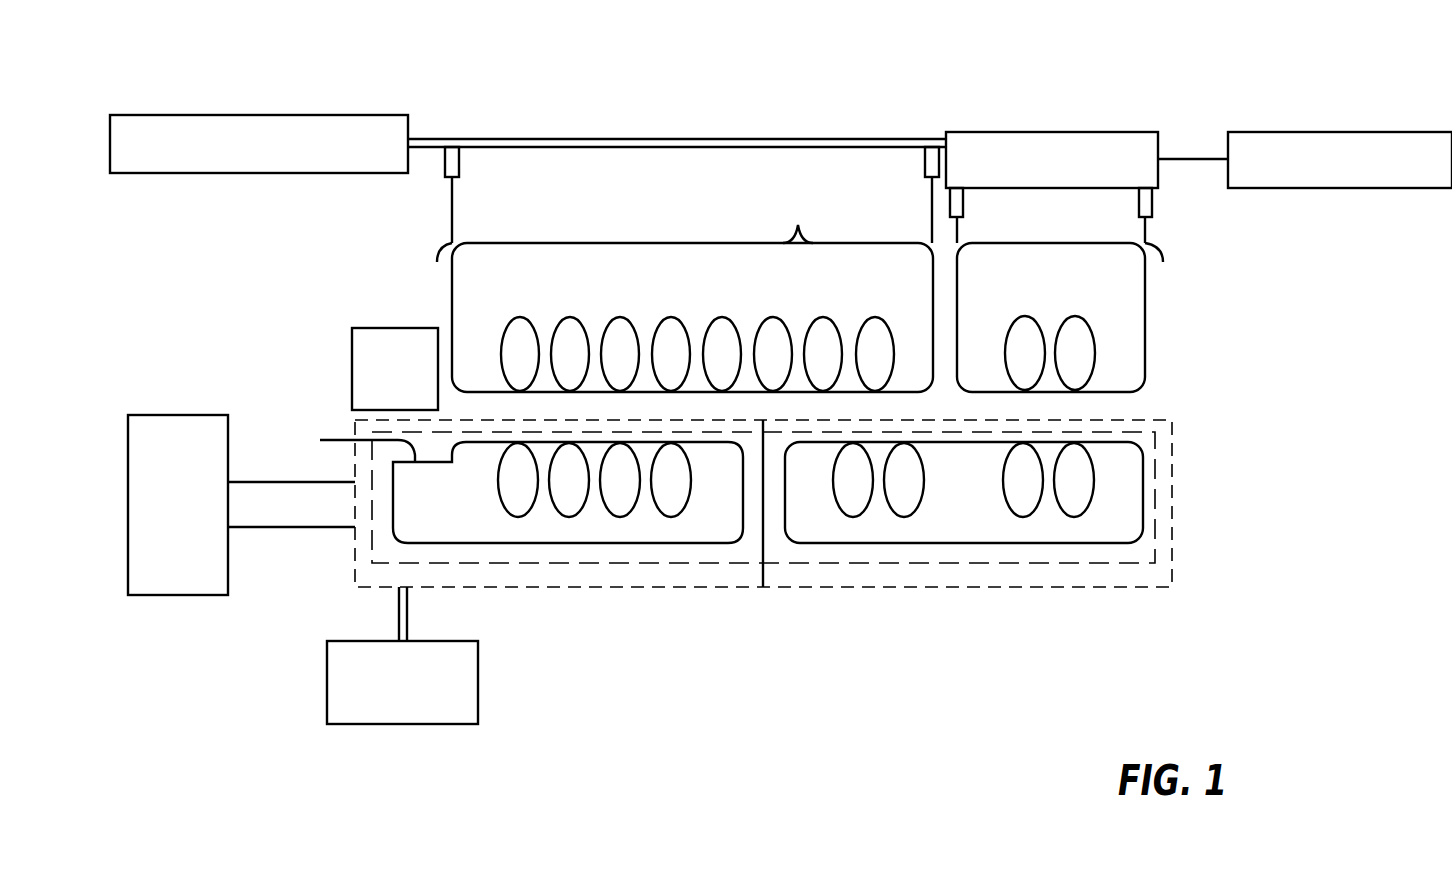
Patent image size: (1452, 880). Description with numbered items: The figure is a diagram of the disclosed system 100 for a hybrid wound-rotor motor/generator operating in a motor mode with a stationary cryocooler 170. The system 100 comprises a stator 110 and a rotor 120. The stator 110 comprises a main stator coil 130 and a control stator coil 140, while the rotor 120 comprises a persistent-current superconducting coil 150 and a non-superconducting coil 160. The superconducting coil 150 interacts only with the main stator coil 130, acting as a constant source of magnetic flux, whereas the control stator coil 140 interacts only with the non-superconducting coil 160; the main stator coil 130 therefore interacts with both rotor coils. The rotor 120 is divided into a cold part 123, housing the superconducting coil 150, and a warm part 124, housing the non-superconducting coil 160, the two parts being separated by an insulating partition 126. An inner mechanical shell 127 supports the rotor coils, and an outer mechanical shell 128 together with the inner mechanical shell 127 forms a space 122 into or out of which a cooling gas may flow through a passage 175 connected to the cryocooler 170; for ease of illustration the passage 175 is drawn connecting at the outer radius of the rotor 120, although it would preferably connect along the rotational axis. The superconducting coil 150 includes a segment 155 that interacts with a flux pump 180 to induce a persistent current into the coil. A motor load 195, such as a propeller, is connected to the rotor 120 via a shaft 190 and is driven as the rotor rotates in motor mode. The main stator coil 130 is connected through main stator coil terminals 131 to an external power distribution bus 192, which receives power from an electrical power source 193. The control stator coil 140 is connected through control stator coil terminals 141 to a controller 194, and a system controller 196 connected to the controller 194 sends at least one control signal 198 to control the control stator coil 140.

The system 100 is at (370, 54).
The stator 110 is at (800, 229).
The rotor 120 is at (1176, 522).
The space 122 is at (624, 576).
The cold part 123 is at (669, 578).
The warm part 124 is at (973, 577).
The insulating partition 126 is at (765, 553).
The inner mechanical shell 127 is at (1156, 458).
The outer mechanical shell 128 is at (1173, 575).
The main stator coil 130 is at (592, 312).
The main stator coil terminals 131 is at (460, 160).
The control stator coil 140 is at (1052, 312).
The control stator coil terminals 141 is at (1139, 205).
The persistent-current superconducting coil 150 is at (479, 508).
The segment 155 is at (347, 445).
The non-superconducting coil 160 is at (986, 523).
The cryocooler 170 is at (408, 724).
The passage 175 is at (399, 610).
The flux pump 180 is at (352, 375).
The shaft 190 is at (303, 528).
The power distribution bus 192 is at (706, 138).
The electrical power source 193 is at (183, 175).
The controller 194 is at (1040, 132).
The motor load 195 is at (168, 412).
The system controller 196 is at (1345, 190).
The control signal 198 is at (1192, 159).